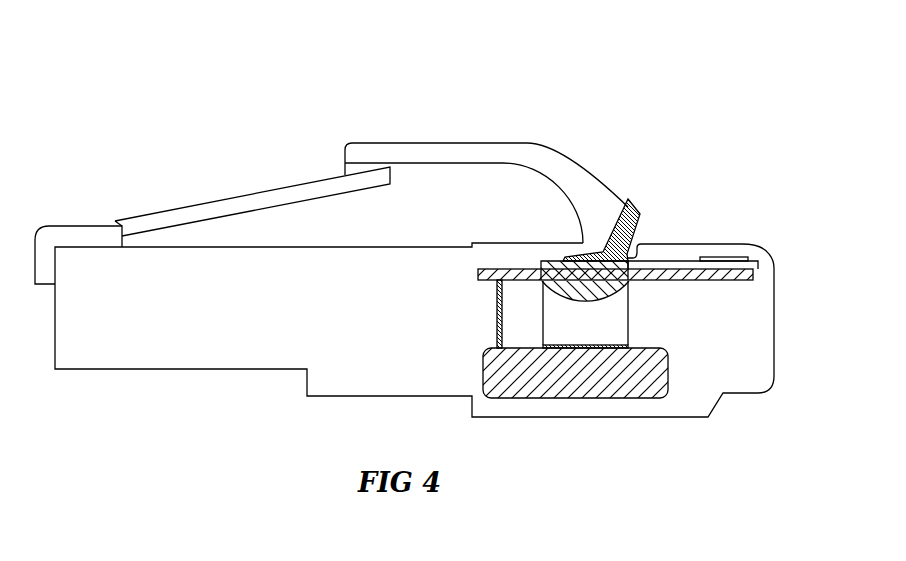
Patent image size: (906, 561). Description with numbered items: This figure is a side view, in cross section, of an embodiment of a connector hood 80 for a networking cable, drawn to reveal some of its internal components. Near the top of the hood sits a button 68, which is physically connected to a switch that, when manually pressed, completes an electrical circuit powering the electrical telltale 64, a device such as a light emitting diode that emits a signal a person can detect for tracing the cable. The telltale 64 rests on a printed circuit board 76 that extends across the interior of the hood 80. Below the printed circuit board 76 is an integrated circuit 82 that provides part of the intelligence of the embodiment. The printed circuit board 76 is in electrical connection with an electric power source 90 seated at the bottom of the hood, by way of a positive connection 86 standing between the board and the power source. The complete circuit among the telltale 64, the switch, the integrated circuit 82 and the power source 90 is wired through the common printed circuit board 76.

The hood 80 is at (185, 134).
The integrated circuit 82 is at (578, 290).
The button 68 is at (630, 205).
The electrical telltale 64 is at (716, 257).
The positive connection 86 is at (608, 323).
The printed circuit board 76 is at (717, 273).
The electric power source 90 is at (522, 385).